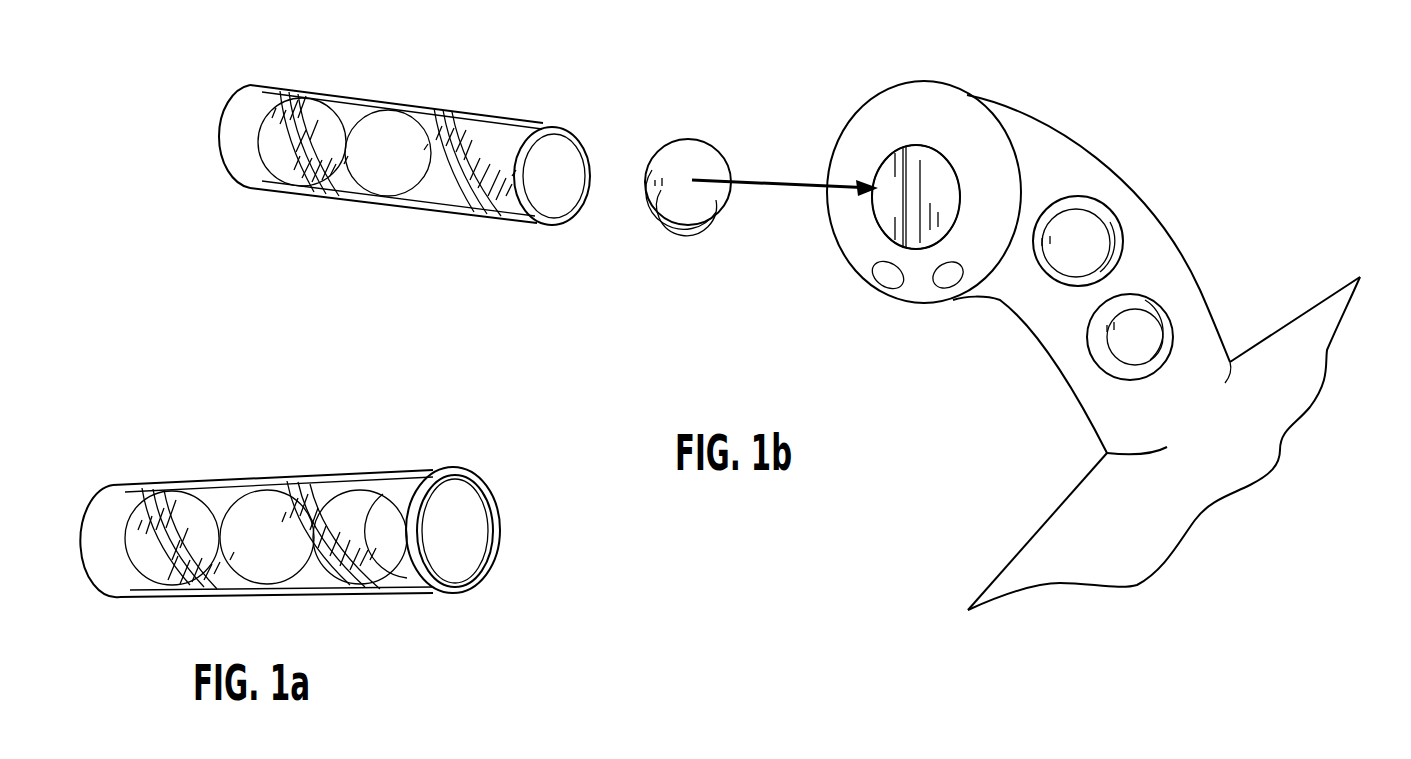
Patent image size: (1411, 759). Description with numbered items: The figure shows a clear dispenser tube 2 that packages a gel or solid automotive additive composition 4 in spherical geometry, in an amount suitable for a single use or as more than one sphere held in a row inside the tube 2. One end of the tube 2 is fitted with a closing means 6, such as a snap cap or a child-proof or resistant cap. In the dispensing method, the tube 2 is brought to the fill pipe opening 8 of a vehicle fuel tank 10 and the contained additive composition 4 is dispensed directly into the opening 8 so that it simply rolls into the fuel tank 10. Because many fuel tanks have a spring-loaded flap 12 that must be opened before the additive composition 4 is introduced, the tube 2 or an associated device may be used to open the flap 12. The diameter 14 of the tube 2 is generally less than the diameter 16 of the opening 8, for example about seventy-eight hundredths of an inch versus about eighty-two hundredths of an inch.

In FIG. 1b, the dispenser tube 2 is at (444, 100).
In FIG. 1a, the dispenser tube 2 is at (323, 468).
In FIG. 1b, the automotive additive composition 4 is at (705, 203).
In FIG. 1a, the automotive additive composition 4 is at (362, 545).
In FIG. 1a, the closing means 6 is at (497, 523).
In FIG. 1b, the fill pipe opening 8 is at (874, 240).
In FIG. 1b, the fuel tank 10 is at (1067, 500).
In FIG. 1b, the spring-loaded flap 12 is at (938, 148).
In FIG. 1b, the diameter of tube 14 is at (747, 135).
In FIG. 1b, the diameter of opening 16 is at (880, 247).